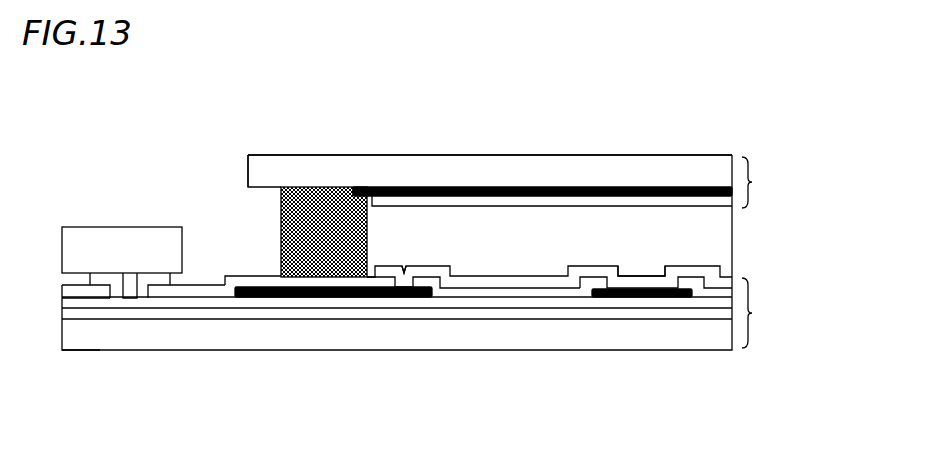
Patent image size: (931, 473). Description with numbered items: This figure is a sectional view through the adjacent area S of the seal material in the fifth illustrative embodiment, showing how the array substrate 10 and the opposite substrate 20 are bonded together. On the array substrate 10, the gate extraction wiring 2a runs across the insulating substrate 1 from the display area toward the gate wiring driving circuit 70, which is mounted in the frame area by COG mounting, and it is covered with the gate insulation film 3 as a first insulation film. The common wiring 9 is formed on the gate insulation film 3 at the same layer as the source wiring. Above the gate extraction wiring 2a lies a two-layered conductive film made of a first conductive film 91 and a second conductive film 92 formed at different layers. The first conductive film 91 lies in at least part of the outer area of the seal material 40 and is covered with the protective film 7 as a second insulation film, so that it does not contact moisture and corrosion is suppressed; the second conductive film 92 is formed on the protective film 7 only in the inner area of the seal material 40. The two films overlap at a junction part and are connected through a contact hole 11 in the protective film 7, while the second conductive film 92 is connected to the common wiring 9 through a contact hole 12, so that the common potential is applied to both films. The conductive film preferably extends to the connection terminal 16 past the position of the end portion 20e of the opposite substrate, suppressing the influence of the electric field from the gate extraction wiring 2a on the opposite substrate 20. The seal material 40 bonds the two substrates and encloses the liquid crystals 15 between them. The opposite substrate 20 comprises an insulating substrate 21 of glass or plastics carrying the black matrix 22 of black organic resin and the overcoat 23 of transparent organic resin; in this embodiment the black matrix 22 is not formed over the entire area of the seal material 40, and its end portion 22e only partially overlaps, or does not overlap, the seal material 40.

The array substrate 10 is at (791, 326).
The insulating substrate 1 is at (403, 333).
The gate extraction wiring 2a is at (223, 318).
The gate insulation film 3 is at (460, 292).
The adjacent area of seal material S is at (66, 398).
The first conductive film 91 is at (335, 297).
The common wiring 9 is at (652, 297).
The second conductive film 92 is at (505, 288).
The protective film 7 is at (580, 290).
The connection terminal 16 is at (125, 302).
The liquid crystals 15 is at (685, 243).
The contact hole 11 is at (403, 273).
The contact hole 12 is at (641, 266).
The gate wiring driving circuit 70 is at (118, 235).
The seal material 40 is at (318, 210).
The opposite substrate 20 is at (791, 199).
The insulating substrate 21 is at (420, 168).
The black matrix 22 is at (517, 187).
The end portion of the opposite substrate 20e is at (248, 153).
The end portion of the black matrix 22e is at (355, 187).
The overcoat 23 is at (595, 203).